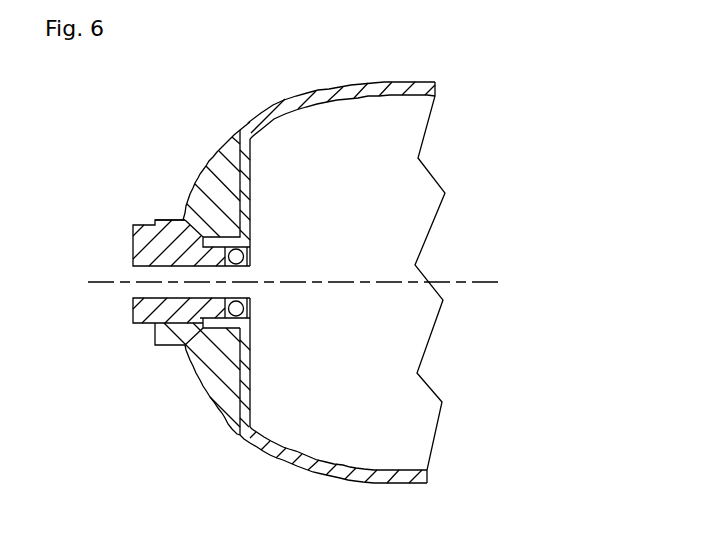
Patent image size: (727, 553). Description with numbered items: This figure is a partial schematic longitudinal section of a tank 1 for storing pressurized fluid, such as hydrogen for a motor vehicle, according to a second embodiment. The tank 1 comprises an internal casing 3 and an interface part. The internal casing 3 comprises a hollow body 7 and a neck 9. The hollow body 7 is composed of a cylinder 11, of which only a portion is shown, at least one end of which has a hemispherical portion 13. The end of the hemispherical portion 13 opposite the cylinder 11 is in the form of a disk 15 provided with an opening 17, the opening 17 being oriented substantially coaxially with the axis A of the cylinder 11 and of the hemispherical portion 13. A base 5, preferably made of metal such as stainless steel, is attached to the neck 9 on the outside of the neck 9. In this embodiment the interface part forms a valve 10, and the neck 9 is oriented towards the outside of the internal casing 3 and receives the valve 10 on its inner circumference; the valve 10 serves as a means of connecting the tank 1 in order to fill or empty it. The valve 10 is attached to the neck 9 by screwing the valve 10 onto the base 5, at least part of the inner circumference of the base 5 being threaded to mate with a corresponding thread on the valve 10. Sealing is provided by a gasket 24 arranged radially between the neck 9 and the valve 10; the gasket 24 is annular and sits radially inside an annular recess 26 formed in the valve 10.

The tank 1 is at (151, 145).
The internal casing 3 is at (465, 116).
The base 5 is at (172, 228).
The hollow body 7 is at (378, 82).
The neck 9 is at (250, 325).
The valve 10 is at (143, 305).
The cylinder 11 is at (385, 483).
The hemispherical portion 13 is at (298, 463).
The disk 15 is at (240, 378).
The opening 17 is at (278, 273).
The gasket 24 is at (235, 247).
The annular recess 26 is at (200, 343).
The axis A is at (283, 283).